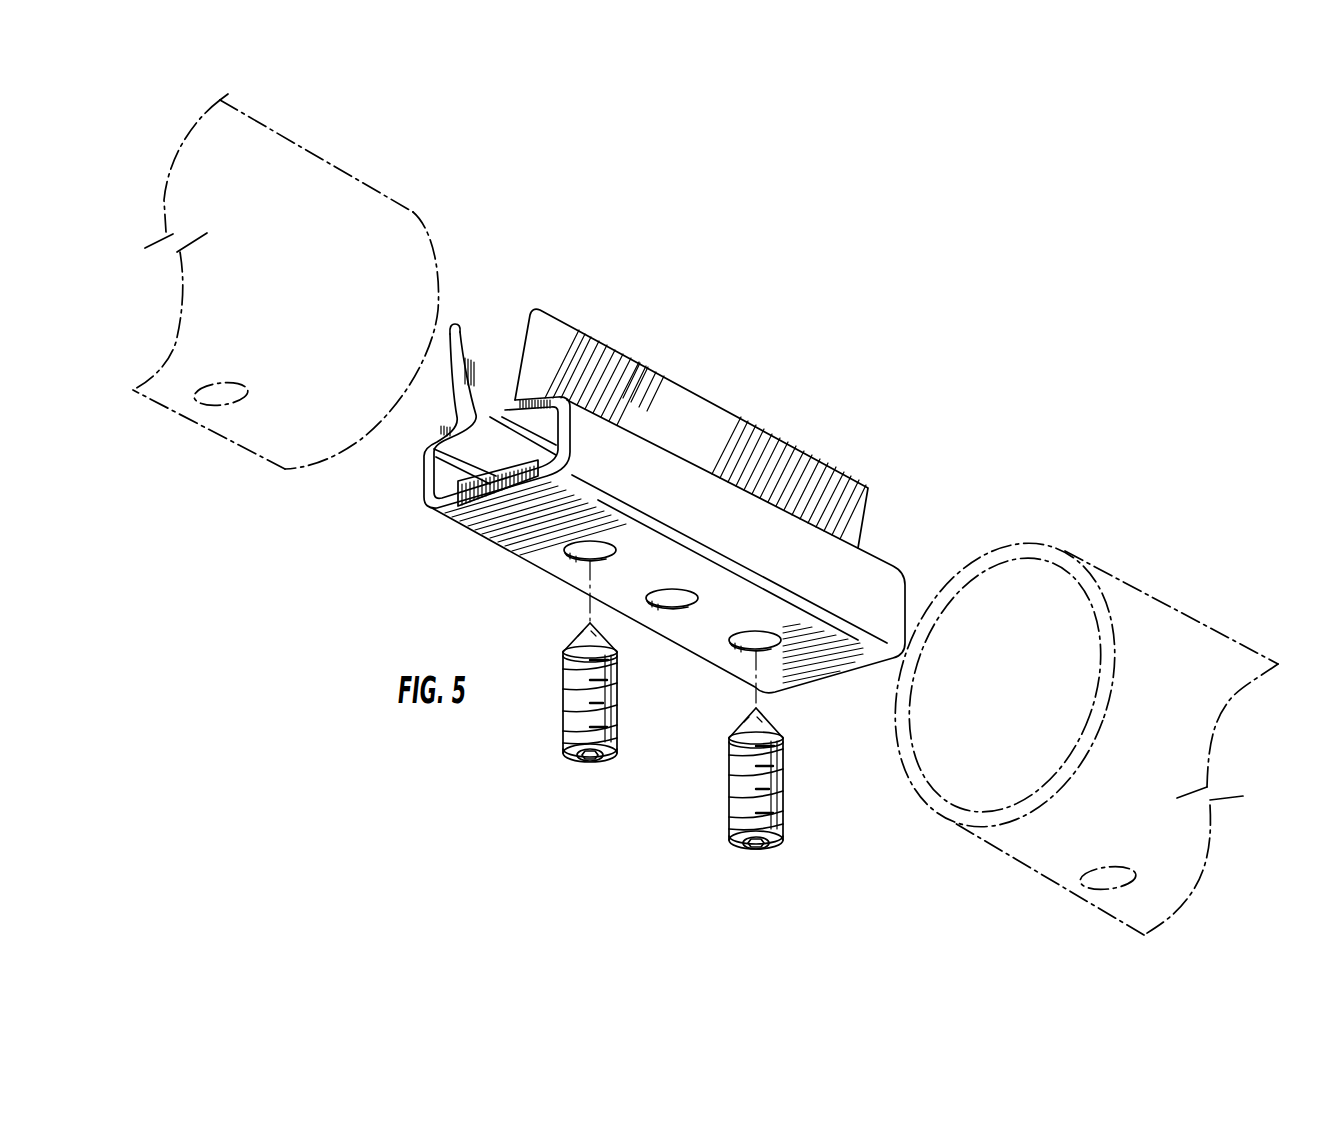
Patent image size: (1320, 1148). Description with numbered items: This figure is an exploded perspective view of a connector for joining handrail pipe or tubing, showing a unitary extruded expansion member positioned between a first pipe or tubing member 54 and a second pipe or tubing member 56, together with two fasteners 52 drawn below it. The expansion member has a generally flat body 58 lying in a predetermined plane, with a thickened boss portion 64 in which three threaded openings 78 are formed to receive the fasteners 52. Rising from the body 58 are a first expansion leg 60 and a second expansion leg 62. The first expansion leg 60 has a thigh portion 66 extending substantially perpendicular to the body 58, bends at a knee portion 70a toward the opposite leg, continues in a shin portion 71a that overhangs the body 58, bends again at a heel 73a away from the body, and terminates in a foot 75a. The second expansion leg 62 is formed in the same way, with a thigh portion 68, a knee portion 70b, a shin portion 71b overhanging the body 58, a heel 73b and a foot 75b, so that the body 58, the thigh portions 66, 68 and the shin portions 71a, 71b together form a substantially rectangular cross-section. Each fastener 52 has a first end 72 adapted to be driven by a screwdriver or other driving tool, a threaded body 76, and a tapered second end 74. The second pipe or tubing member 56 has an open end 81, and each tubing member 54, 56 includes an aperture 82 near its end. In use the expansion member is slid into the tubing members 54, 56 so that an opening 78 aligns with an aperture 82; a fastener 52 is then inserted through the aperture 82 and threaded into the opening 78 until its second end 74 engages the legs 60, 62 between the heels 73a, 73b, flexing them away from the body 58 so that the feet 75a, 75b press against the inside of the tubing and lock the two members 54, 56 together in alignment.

The fastener 52 is at (522, 744).
The first pipe or tubing member 54 is at (342, 205).
The second pipe or tubing member 56 is at (1172, 623).
The body 58 is at (878, 583).
The first expansion leg 60 is at (537, 330).
The second expansion leg 62 is at (460, 347).
The boss portion 64 is at (480, 530).
The thigh portion 66 is at (573, 433).
The thigh portion 68 is at (432, 493).
The knee portion 70a is at (540, 380).
The knee portion 70b is at (448, 428).
The shin portion 71a is at (540, 417).
The shin portion 71b is at (447, 407).
The first end 72 is at (588, 760).
The heel 73a is at (510, 353).
The heel 73b is at (433, 357).
The second end 74 is at (584, 630).
The foot 75a is at (532, 330).
The foot 75b is at (452, 330).
The body 76 is at (600, 707).
The opening 78 is at (577, 550).
The open end 81 is at (1006, 592).
The aperture 82 is at (215, 394).